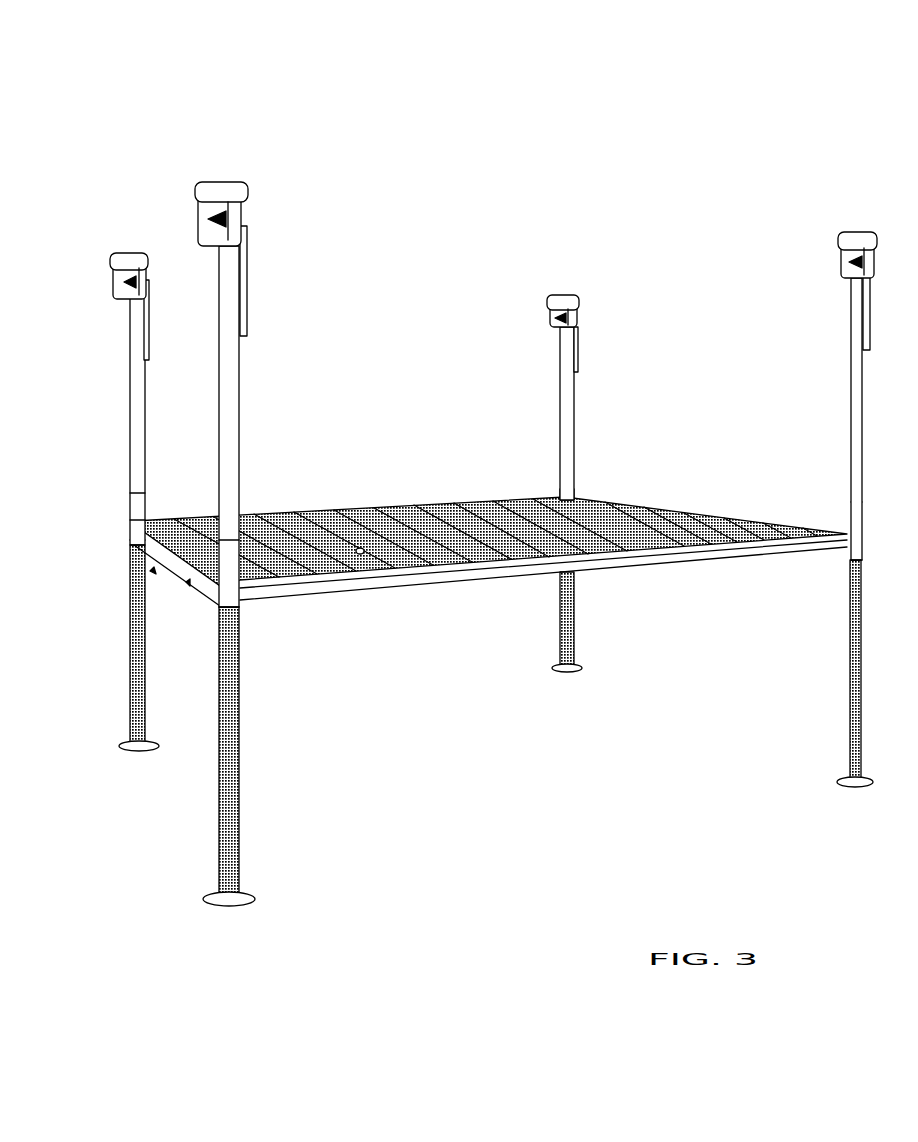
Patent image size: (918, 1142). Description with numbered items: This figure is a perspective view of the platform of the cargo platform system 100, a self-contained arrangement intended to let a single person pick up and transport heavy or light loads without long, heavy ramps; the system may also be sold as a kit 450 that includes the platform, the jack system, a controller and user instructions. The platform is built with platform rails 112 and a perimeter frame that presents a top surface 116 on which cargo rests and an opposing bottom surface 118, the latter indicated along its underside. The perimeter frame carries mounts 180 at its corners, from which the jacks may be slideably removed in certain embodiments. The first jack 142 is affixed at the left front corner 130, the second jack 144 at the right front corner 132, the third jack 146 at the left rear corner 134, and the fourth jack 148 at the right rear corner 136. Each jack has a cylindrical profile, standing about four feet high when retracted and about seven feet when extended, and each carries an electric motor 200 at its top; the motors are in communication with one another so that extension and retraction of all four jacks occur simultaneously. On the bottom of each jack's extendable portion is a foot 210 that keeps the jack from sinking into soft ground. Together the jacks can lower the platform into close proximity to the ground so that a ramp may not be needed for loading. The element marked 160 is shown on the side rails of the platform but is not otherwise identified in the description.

The cargo platform system 100 is at (620, 78).
The kit 450 is at (648, 128).
The electric motors 200 is at (222, 180).
The third jack 146 is at (127, 391).
The fourth jack 148 is at (243, 395).
The first jack 142 is at (558, 369).
The second jack 144 is at (851, 378).
The top surface 116 is at (441, 524).
The bottom surface 118 is at (366, 562).
The side rail 160 is at (133, 512).
The platform rails 112 is at (155, 579).
The left rear corner 134 is at (134, 541).
The right rear corner 136 is at (253, 601).
The right front corner 132 is at (831, 561).
The left front corner 130 is at (549, 493).
The mounts 180 is at (582, 493).
The feet 210 is at (128, 740).